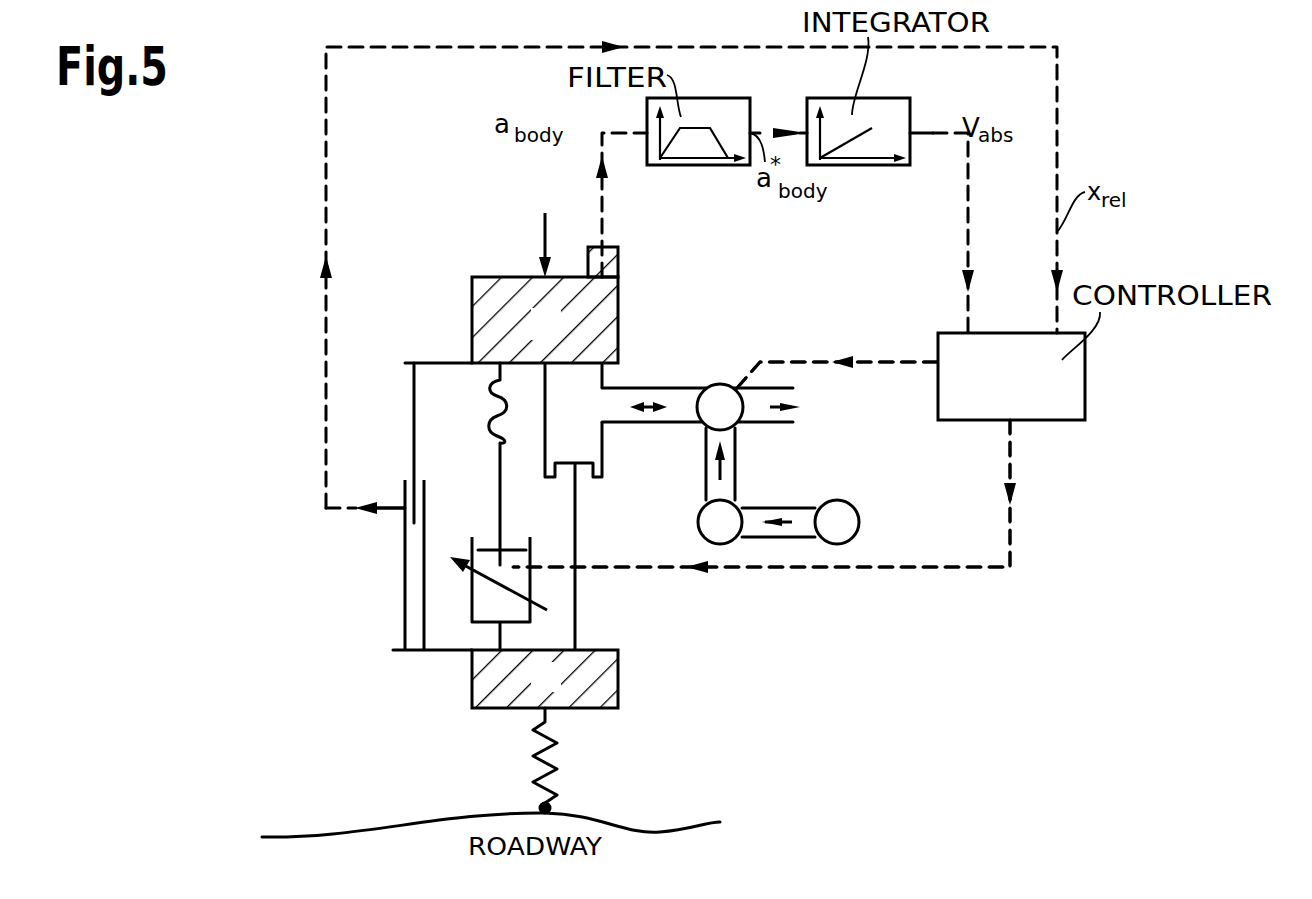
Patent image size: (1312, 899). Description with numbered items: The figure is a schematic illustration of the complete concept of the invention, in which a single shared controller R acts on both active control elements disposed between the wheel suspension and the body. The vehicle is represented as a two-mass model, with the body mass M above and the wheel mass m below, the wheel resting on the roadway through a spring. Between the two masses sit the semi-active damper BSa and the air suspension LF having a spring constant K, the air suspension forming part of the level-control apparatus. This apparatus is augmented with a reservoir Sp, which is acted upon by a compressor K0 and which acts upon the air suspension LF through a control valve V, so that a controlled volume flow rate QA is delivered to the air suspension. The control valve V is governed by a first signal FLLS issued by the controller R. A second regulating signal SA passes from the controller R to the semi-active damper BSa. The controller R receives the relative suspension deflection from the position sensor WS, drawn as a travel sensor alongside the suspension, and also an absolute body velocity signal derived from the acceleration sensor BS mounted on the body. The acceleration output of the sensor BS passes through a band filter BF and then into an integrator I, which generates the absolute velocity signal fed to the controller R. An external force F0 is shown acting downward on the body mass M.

The band filter BF is at (727, 110).
The integrator I is at (893, 107).
The external force F0 is at (540, 242).
The acceleration sensor BS is at (618, 260).
The body mass M is at (545, 320).
The wheel mass m is at (545, 679).
The air suspension LF is at (583, 438).
The spring constant K is at (578, 522).
The controlled volume flow rate QA is at (653, 392).
The control valve V is at (731, 395).
The FLLS signal FLLS is at (783, 362).
The reservoir Sp is at (700, 530).
The compressor K0 is at (848, 526).
The position sensor WS is at (405, 484).
The semi-active damper BSa is at (480, 605).
The regulating signal SA is at (937, 567).
The controller R is at (1063, 407).